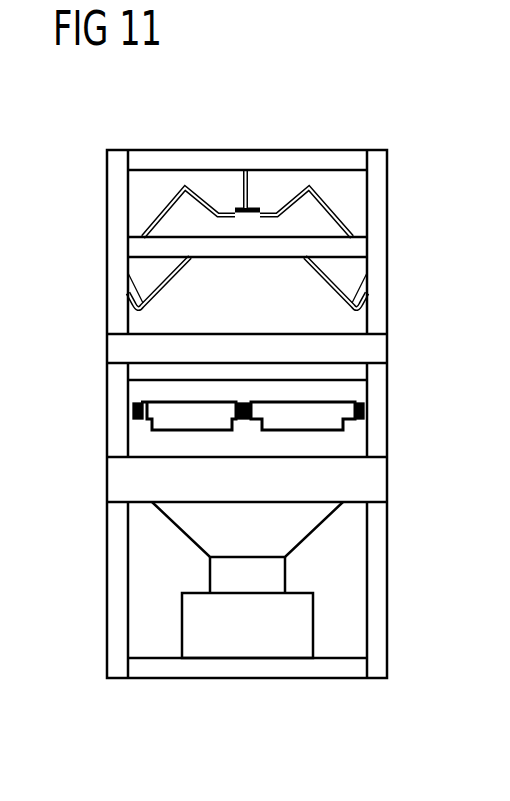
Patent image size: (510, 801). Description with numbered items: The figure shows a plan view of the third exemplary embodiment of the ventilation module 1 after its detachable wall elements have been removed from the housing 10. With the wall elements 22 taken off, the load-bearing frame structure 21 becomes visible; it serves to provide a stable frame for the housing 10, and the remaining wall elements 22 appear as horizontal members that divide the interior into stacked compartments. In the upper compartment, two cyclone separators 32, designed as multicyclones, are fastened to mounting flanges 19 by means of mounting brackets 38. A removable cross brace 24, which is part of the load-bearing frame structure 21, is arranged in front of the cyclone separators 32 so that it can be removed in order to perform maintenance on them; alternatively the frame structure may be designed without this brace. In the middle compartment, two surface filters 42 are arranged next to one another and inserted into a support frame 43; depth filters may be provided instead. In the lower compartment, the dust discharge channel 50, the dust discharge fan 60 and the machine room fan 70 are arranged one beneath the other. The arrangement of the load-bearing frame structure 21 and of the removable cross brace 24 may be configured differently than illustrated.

The ventilation module 1 is at (366, 700).
The housing 10 is at (388, 170).
The mounting flange 19 is at (245, 178).
The load-bearing frame structure 21 is at (183, 160).
The wall element 22 is at (377, 352).
The removable cross brace 24 is at (258, 250).
The cyclone separator 32 is at (165, 218).
The mounting bracket 38 is at (263, 213).
The surface filter 42 is at (155, 422).
The support frame 43 is at (137, 403).
The dust discharge channel 50 is at (273, 533).
The dust discharge fan 60 is at (273, 572).
The machine room fan 70 is at (302, 620).